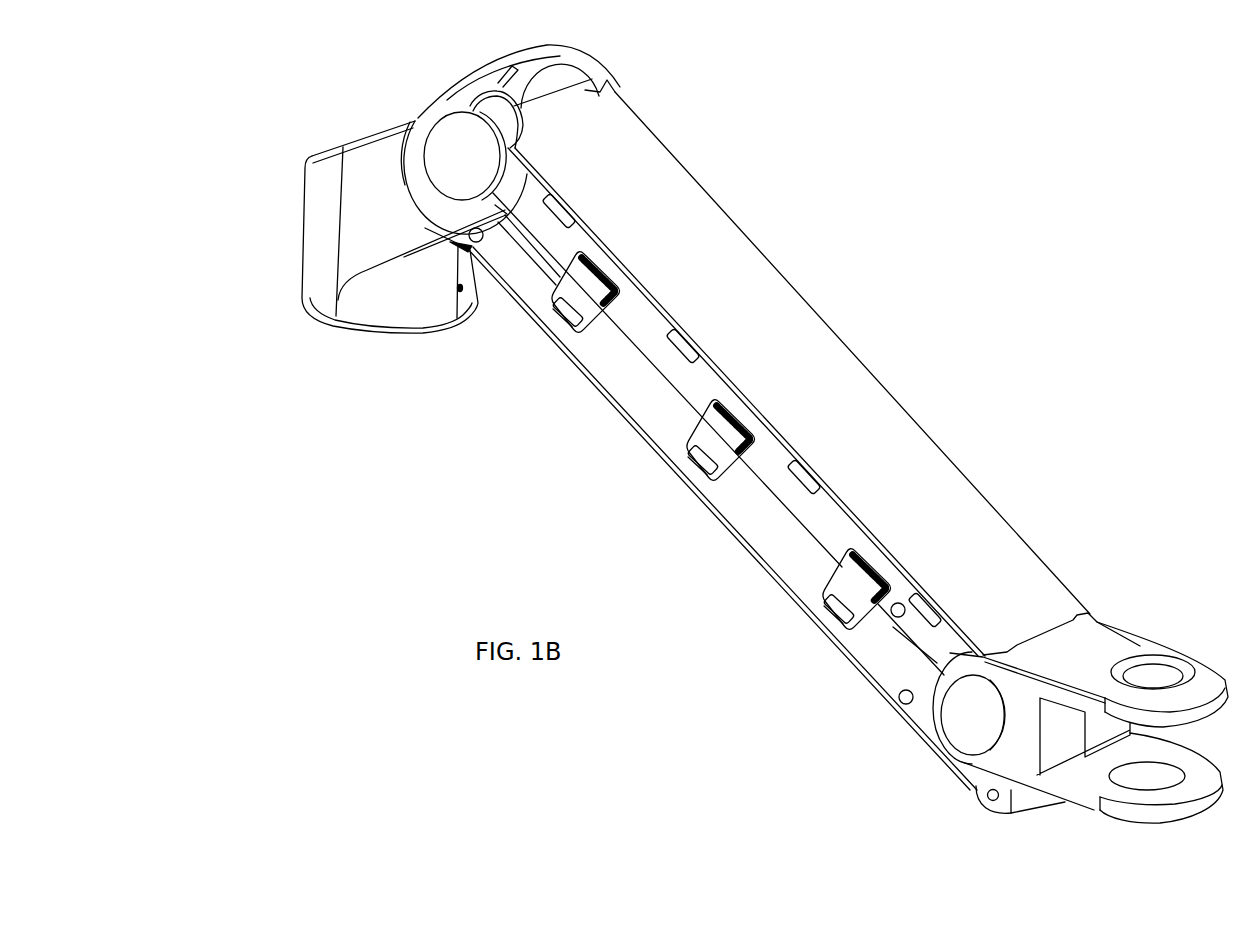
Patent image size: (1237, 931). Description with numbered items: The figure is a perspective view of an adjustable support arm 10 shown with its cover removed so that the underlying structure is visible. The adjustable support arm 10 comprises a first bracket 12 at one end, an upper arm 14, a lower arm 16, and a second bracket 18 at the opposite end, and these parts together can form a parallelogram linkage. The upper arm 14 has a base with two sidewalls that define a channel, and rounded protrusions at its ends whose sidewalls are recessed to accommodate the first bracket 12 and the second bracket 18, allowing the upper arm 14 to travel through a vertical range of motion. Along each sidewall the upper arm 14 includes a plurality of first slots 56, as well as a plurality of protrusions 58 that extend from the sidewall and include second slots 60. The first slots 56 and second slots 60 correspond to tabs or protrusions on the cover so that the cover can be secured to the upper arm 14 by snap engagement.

The adjustable support arm 10 is at (1010, 276).
The first bracket 12 is at (322, 228).
The upper arm 14 is at (745, 350).
The lower arm 16 is at (765, 503).
The second bracket 18 is at (1105, 642).
The first slots 56 is at (677, 343).
The protrusions 58 is at (861, 593).
The second slots 60 is at (833, 615).